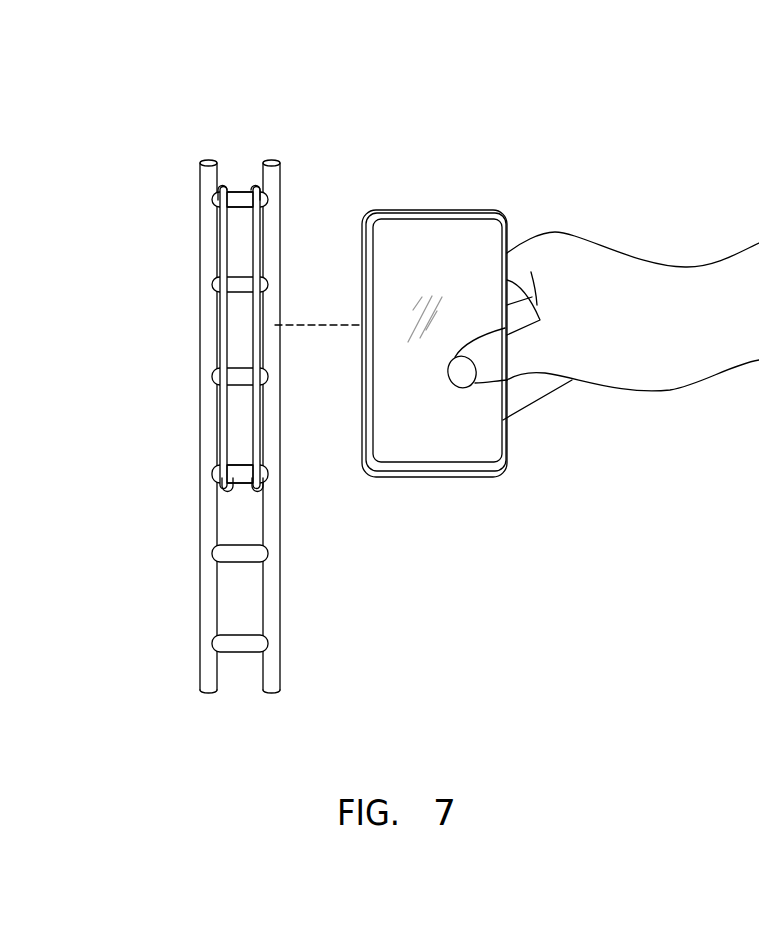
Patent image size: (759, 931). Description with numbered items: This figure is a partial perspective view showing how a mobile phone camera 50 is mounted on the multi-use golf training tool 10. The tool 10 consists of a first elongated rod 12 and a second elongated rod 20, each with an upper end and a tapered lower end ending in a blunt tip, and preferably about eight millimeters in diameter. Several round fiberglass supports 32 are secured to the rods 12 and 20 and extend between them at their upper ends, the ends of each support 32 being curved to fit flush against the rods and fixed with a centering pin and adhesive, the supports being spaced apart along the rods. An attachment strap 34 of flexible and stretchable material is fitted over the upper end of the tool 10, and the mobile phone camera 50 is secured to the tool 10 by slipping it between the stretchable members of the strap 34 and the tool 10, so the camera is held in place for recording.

The multi-use golf training tool 10 is at (318, 144).
The first elongated rod 12 is at (198, 251).
The second elongated rod 20 is at (284, 448).
The round fiberglass support 32 is at (243, 197).
The attachment strap 34 is at (266, 234).
The mobile phone camera 50 is at (492, 204).